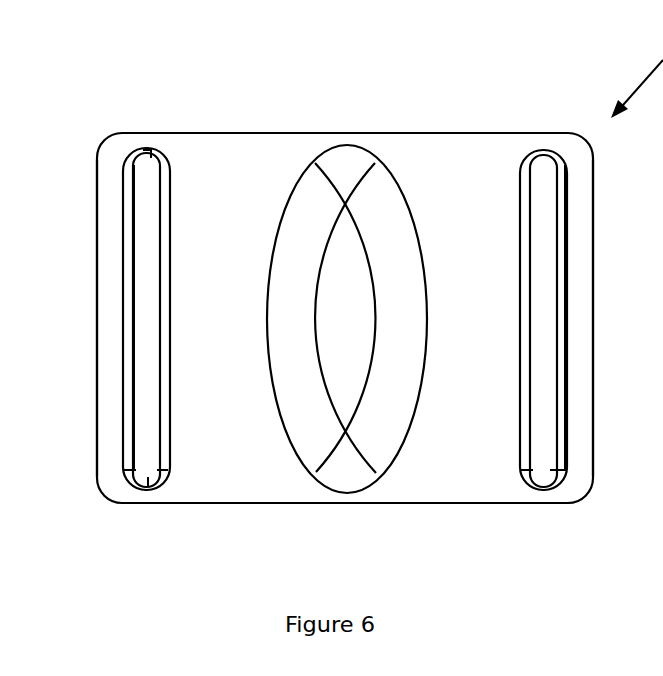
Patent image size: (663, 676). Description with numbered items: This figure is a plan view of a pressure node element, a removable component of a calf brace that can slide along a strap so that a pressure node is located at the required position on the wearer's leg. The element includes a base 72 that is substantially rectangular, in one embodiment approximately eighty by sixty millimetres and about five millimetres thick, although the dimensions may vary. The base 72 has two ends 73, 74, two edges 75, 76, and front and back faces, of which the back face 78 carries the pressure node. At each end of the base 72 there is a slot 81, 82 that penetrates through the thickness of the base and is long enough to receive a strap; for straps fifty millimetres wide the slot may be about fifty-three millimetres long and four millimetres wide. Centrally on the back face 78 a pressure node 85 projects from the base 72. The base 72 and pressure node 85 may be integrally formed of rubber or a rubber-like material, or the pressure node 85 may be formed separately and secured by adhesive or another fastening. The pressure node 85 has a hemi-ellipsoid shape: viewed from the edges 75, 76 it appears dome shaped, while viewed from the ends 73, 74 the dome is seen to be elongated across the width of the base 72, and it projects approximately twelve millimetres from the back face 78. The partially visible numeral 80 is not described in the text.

The base 72 is at (217, 437).
The end 73 is at (95, 366).
The end 74 is at (590, 431).
The edge 75 is at (431, 503).
The edge 76 is at (444, 133).
The back face 78 is at (282, 490).
The slot 81 is at (145, 192).
The slot 82 is at (543, 180).
The pressure node 85 is at (346, 208).
The device 80 is at (658, 275).